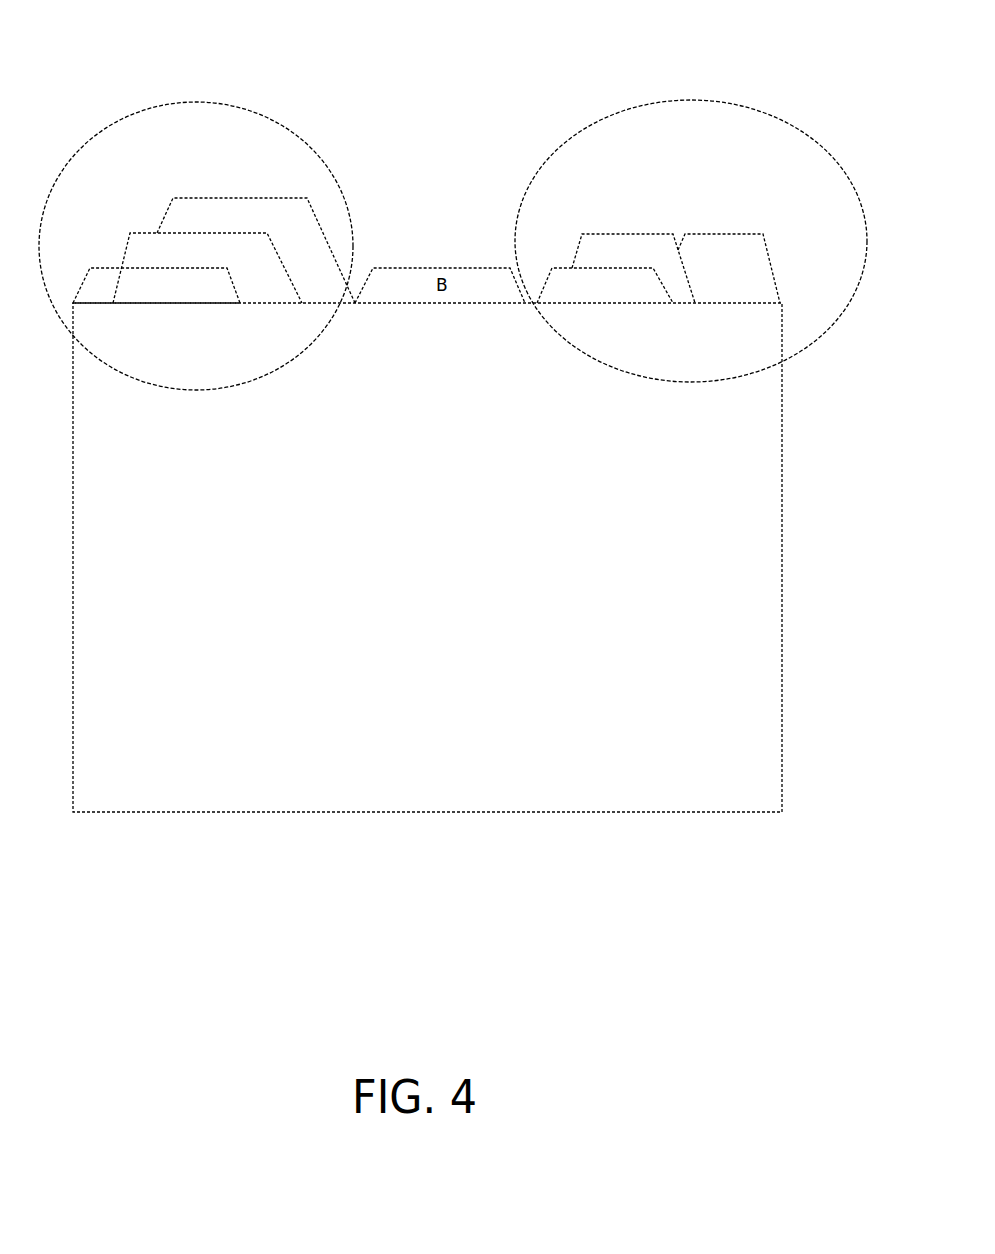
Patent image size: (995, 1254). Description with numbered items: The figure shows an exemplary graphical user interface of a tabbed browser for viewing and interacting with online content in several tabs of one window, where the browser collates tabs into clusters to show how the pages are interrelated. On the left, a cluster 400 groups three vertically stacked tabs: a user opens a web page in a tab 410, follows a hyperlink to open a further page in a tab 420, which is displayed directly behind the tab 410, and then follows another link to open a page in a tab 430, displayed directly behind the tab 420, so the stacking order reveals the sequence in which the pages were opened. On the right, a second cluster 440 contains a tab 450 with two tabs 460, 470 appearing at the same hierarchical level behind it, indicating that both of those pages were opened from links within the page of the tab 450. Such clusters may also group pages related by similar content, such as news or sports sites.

The cluster 400 is at (283, 170).
The tab 410 is at (71, 282).
The tab 420 is at (119, 234).
The tab 430 is at (174, 182).
The cluster 440 is at (681, 86).
The tab 450 is at (545, 258).
The tab 460 is at (611, 216).
The tab 470 is at (735, 229).